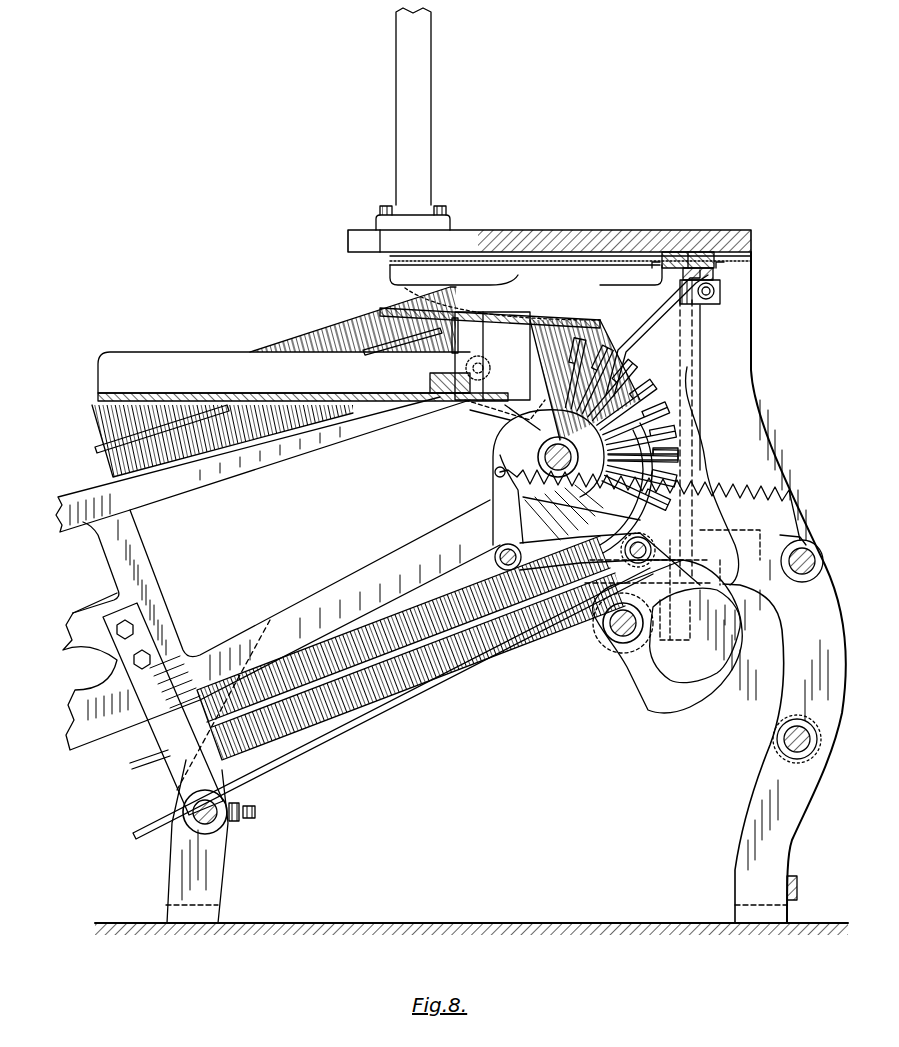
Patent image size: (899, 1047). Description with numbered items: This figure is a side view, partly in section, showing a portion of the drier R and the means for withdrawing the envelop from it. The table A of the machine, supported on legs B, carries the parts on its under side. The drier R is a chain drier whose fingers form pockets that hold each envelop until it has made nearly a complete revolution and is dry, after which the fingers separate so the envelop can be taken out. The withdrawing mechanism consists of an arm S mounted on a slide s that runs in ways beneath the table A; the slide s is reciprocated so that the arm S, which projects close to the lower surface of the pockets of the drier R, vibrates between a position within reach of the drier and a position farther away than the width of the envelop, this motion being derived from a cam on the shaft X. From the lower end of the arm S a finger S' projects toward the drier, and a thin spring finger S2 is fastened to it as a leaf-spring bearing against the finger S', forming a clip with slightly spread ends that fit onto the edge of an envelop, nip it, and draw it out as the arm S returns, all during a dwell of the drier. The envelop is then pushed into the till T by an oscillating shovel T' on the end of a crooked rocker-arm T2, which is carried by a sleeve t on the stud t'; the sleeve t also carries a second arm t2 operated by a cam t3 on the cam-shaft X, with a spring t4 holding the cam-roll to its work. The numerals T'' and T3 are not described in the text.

The table A is at (757, 238).
The legs B is at (506, 587).
The arm S is at (665, 391).
The slide s is at (648, 335).
The finger S' is at (710, 273).
The spring finger S2 is at (708, 302).
The till T is at (314, 356).
The oscillating shovel T' is at (366, 382).
The type bar hangers T'' is at (512, 306).
The crooked rocker-arm T2 is at (498, 443).
The type bar segment T3 is at (560, 318).
The drier R is at (278, 573).
The sleeve t is at (580, 557).
The stud t' is at (520, 556).
The second arm t2 is at (613, 550).
The cam t3 is at (640, 682).
The spring t4 is at (740, 520).
The cam-shaft X is at (612, 640).